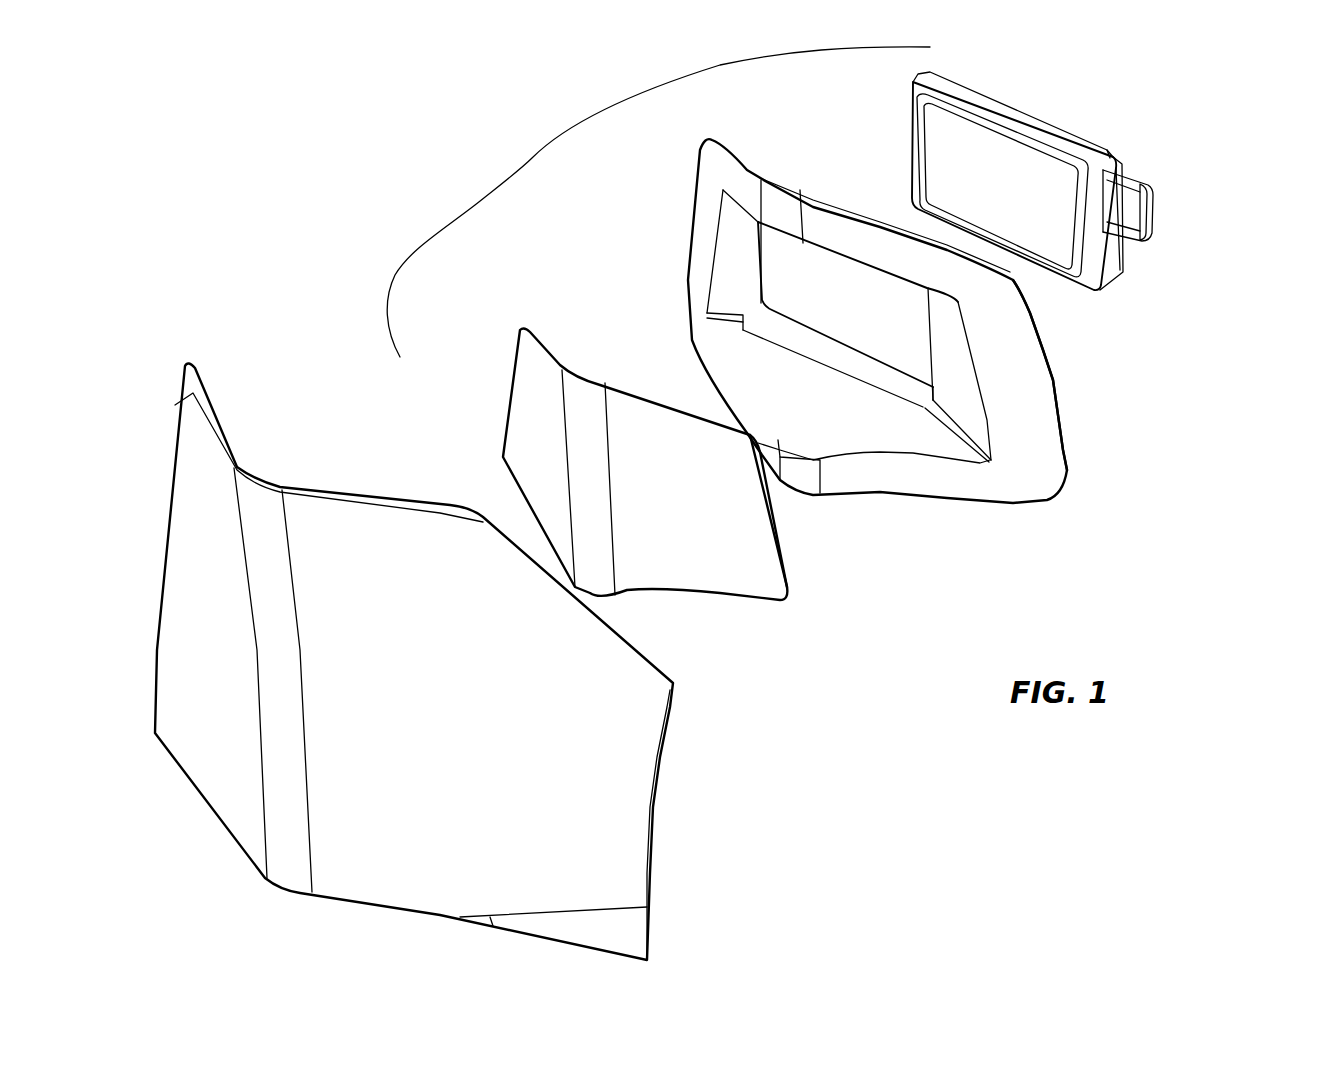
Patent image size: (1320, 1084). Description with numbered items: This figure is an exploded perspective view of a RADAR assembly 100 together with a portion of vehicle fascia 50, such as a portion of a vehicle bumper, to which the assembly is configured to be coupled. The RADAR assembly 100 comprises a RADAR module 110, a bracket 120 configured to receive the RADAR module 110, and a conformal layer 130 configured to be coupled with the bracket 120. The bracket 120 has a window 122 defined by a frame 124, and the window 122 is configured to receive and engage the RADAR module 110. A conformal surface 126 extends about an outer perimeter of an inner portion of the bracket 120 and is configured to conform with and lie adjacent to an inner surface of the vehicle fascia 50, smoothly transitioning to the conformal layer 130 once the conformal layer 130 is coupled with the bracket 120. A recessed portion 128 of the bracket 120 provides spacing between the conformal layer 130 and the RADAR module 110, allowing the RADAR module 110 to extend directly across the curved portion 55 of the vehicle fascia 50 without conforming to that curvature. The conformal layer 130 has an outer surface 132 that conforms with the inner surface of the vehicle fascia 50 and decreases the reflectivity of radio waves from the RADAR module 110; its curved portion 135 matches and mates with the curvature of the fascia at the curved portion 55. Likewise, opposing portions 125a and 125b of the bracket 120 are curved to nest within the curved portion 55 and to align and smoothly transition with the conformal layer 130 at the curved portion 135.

The vehicle fascia 50 is at (618, 852).
The curved portion 55 is at (266, 458).
The RADAR assembly 100 is at (532, 158).
The RADAR module 110 is at (1106, 120).
The bracket 120 is at (1082, 400).
The window 122 is at (785, 286).
The frame 124 is at (935, 320).
The opposing portion 125a is at (783, 205).
The opposing portion 125b is at (797, 486).
The conformal surface 126 is at (1032, 449).
The recessed portion 128 is at (915, 441).
The conformal layer 130 is at (832, 578).
The outer surface 132 is at (731, 581).
The curved portion 135 is at (578, 428).